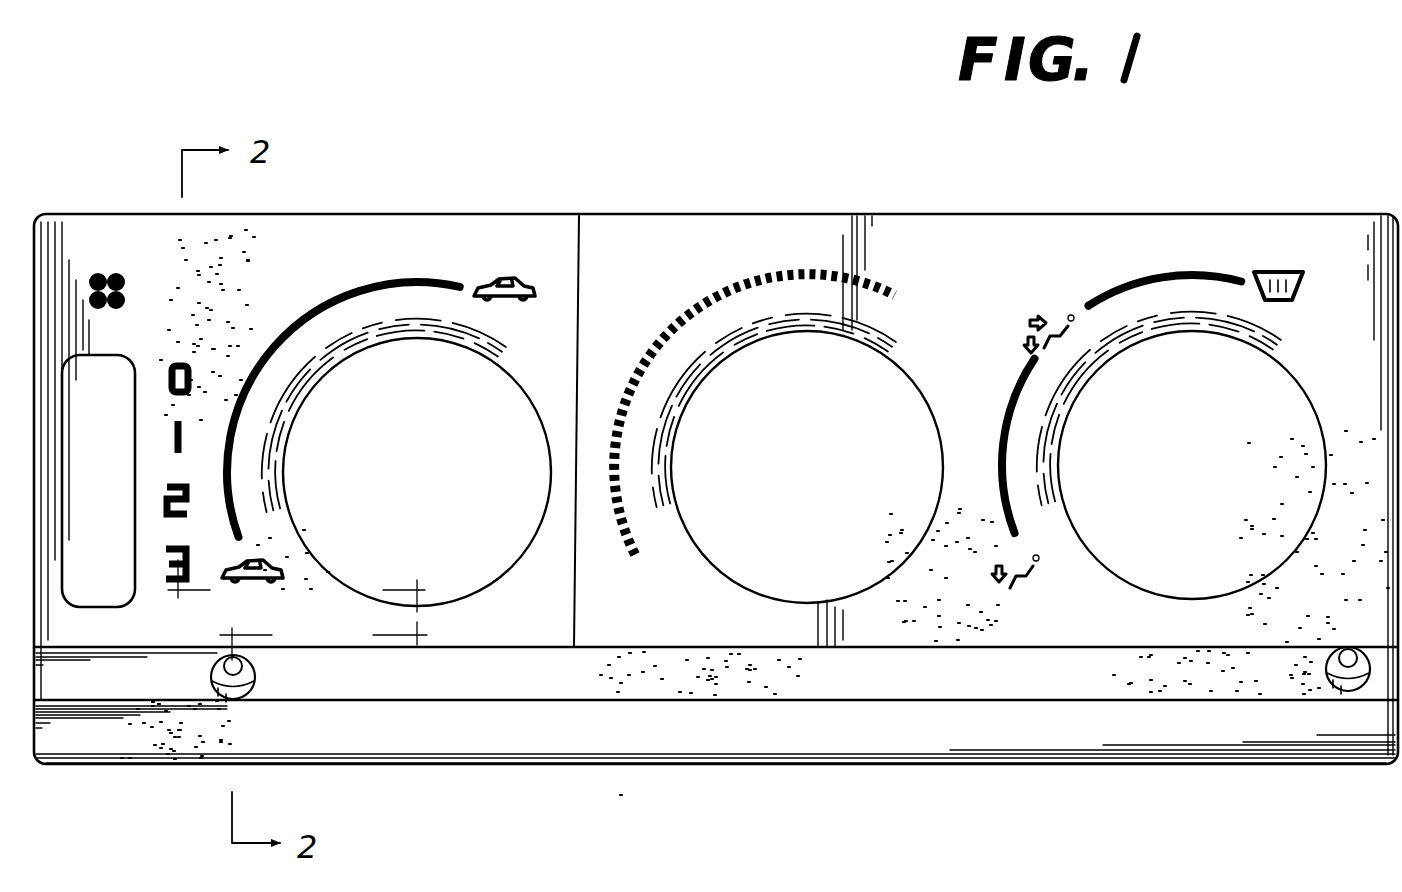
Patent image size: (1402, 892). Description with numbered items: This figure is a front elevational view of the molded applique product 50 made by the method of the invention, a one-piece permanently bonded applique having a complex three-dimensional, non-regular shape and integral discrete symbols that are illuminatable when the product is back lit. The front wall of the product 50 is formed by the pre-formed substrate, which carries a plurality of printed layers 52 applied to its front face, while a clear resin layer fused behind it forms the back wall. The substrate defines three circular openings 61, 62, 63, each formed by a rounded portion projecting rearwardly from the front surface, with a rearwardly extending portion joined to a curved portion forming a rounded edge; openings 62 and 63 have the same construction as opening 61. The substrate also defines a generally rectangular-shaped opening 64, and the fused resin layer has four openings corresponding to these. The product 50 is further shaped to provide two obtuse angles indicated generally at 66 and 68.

The molded applique product 50 is at (760, 200).
The printed layers 52 is at (992, 292).
The circular opening 61 is at (289, 500).
The circular opening 62 is at (678, 498).
The circular opening 63 is at (1062, 496).
The rectangular-shaped opening 64 is at (63, 462).
The obtuse angle 66 is at (1026, 638).
The obtuse angle 68 is at (978, 704).